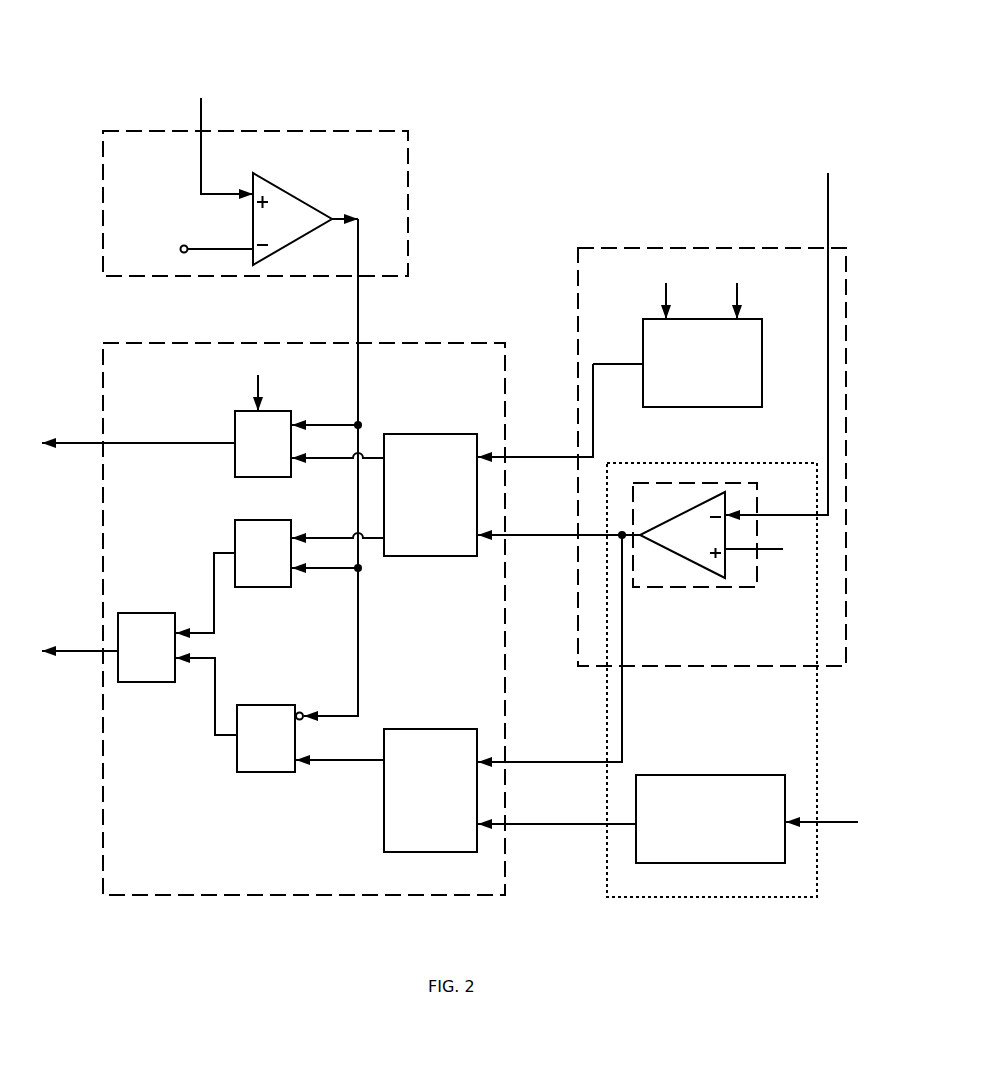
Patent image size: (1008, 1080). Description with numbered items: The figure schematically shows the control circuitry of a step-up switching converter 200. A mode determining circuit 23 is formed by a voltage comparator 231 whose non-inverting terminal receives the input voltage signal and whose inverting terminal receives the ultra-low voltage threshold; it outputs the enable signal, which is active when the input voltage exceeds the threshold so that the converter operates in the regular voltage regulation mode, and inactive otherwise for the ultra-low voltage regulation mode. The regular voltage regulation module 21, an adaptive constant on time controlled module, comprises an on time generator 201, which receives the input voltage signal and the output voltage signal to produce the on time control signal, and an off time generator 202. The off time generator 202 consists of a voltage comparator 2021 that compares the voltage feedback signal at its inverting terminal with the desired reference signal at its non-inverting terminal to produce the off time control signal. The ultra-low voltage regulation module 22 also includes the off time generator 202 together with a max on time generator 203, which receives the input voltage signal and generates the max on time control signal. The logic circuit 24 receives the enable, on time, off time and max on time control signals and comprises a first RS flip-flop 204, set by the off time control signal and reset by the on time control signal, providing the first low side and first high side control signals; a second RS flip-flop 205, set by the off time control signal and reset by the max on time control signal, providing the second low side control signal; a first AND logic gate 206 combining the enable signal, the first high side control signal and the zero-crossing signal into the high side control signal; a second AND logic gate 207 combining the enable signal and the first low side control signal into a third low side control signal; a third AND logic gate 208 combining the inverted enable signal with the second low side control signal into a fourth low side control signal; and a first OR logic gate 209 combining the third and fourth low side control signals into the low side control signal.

The step-up switching converter 200 is at (638, 75).
The mode determining circuit 23 is at (408, 162).
The voltage comparator 231 is at (292, 219).
The regular voltage regulation module 21 is at (847, 305).
The on time generator 201 is at (763, 378).
The off time generator 202 is at (748, 587).
The voltage comparator 2021 is at (682, 535).
The ultra-low voltage regulation module 22 is at (817, 728).
The max on time generator 203 is at (715, 775).
The logic circuit 24 is at (377, 896).
The first RS flip-flop 204 is at (432, 556).
The second RS flip-flop 205 is at (432, 852).
The first AND logic gate 206 is at (235, 425).
The second AND logic gate 207 is at (235, 535).
The third AND logic gate 208 is at (255, 772).
The first OR logic gate 209 is at (148, 613).